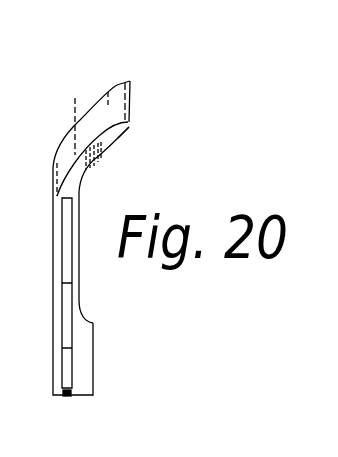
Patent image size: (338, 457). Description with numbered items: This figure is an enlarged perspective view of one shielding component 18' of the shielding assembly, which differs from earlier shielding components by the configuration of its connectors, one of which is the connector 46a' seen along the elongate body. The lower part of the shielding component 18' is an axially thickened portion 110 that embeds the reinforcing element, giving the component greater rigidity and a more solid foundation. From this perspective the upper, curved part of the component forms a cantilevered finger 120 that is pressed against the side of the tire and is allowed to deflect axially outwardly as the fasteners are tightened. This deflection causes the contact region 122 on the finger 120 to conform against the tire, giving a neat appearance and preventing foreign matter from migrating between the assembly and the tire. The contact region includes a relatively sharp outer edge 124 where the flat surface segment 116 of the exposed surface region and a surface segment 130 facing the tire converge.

The flat segment 116 is at (115, 97).
The outer edge 124 is at (132, 81).
The contact region 122 is at (143, 88).
The surface segment 130 is at (138, 121).
The cantilevered finger 120 is at (142, 127).
The shielding component 18' is at (124, 159).
The connector 46a' is at (38, 297).
The thickened portion 110 is at (95, 363).